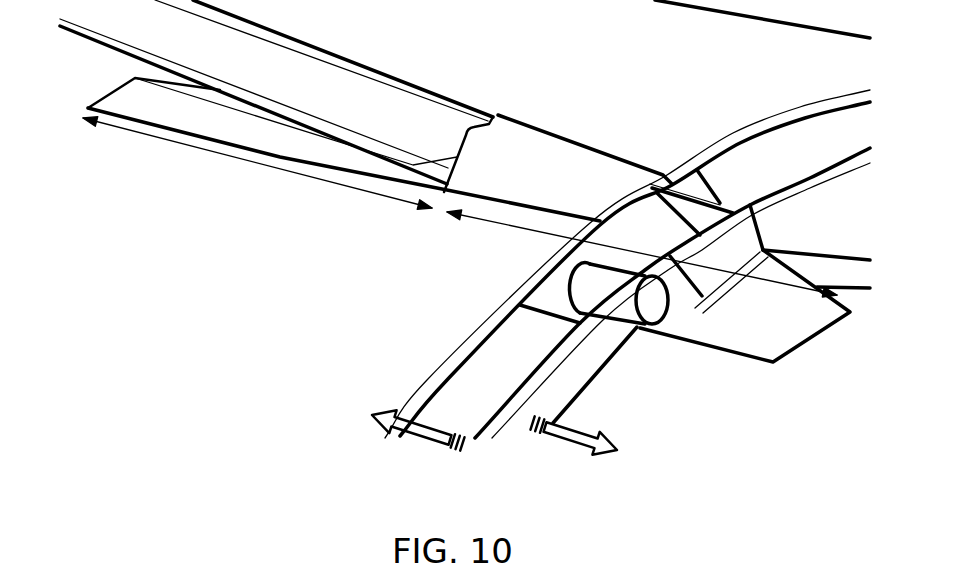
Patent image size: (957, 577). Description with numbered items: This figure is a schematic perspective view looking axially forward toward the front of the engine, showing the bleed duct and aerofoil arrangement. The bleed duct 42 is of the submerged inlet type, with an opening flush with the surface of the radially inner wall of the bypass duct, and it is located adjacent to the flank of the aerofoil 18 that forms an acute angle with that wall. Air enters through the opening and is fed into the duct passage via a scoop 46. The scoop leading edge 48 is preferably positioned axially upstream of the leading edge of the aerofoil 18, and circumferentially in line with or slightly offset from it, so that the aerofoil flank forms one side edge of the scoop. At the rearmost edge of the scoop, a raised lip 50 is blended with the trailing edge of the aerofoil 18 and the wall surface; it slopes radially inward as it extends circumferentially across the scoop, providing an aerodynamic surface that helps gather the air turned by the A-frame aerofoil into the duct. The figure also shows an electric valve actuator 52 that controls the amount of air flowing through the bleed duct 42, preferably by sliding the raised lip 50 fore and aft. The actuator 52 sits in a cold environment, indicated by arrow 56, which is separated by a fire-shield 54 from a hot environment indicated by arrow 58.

The aerofoil 18 is at (384, 107).
The bleed duct 42 is at (221, 131).
The scoop 46 is at (790, 338).
The scoop leading edge 48 is at (115, 90).
The raised lip 50 is at (572, 162).
The electric valve actuator 52 is at (650, 313).
The fire-shield 54 is at (817, 200).
The arrow (cold environment) 56 is at (423, 437).
The arrow (hot environment) 58 is at (570, 438).